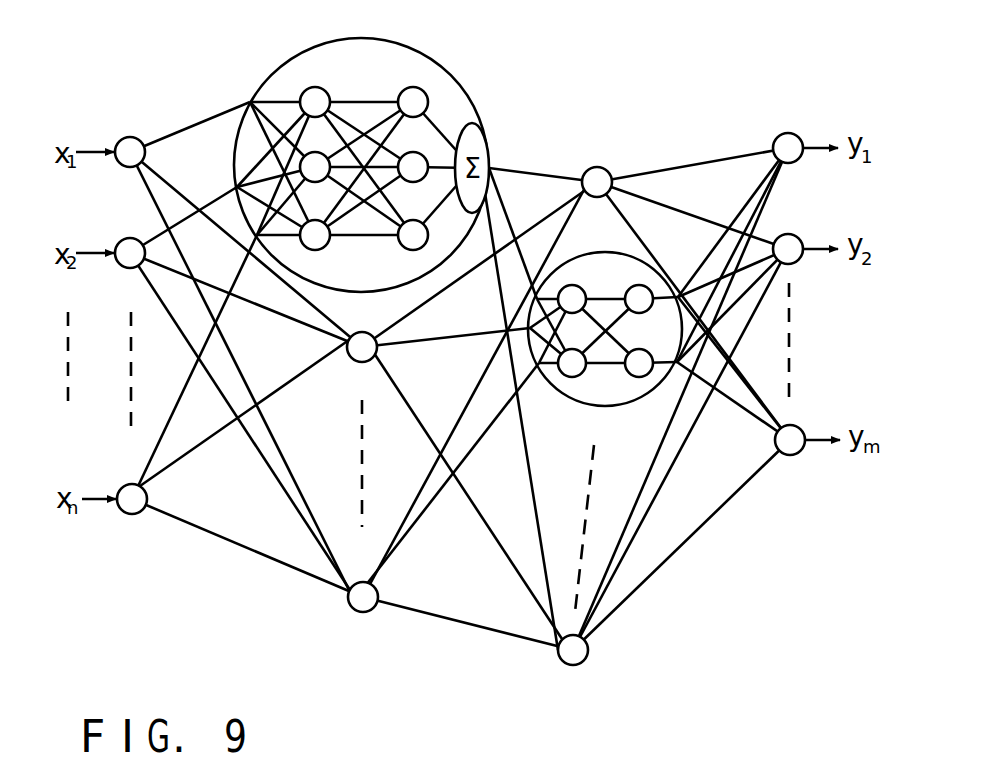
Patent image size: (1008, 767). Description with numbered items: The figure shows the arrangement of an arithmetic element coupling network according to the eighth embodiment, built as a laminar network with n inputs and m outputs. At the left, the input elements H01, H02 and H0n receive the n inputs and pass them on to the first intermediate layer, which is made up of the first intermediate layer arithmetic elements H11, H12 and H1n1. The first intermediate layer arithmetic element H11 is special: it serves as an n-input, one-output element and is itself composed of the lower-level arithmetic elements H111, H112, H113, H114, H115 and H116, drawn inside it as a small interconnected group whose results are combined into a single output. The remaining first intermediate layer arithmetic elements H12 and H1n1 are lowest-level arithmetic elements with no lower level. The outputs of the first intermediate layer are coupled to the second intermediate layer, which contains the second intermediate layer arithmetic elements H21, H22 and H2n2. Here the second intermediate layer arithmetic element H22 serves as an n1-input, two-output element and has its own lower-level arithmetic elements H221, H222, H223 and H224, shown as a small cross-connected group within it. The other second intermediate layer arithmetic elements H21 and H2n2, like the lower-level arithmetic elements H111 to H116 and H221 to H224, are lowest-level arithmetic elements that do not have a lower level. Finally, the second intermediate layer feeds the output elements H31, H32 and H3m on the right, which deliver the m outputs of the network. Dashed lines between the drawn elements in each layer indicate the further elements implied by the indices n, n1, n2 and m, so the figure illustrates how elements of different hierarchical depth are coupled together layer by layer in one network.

The input element H01 is at (132, 137).
The input element H02 is at (132, 238).
The input element H0n is at (128, 484).
The first intermediate layer arithmetic element H11 is at (458, 80).
The lower-level arithmetic element H111 is at (318, 87).
The lower-level arithmetic element H112 is at (318, 152).
The lower-level arithmetic element H113 is at (318, 220).
The lower-level arithmetic element H114 is at (412, 87).
The lower-level arithmetic element H115 is at (415, 152).
The lower-level arithmetic element H116 is at (415, 220).
The first intermediate layer arithmetic element H12 is at (358, 332).
The first intermediate layer arithmetic element H1n1 is at (349, 605).
The second intermediate layer arithmetic element H21 is at (597, 167).
The second intermediate layer arithmetic element H22 is at (603, 252).
The lower-level arithmetic element H221 is at (581, 268).
The lower-level arithmetic element H222 is at (564, 378).
The lower-level arithmetic element H223 is at (650, 286).
The lower-level arithmetic element H224 is at (638, 378).
The second intermediate layer arithmetic element H2n2 is at (589, 651).
The output element H31 is at (788, 133).
The output element H32 is at (789, 234).
The output element H3m is at (790, 456).